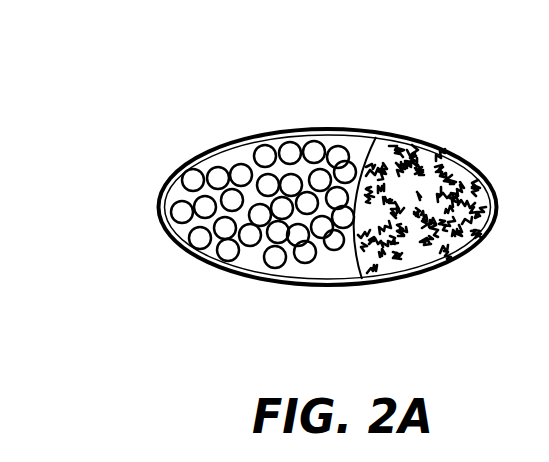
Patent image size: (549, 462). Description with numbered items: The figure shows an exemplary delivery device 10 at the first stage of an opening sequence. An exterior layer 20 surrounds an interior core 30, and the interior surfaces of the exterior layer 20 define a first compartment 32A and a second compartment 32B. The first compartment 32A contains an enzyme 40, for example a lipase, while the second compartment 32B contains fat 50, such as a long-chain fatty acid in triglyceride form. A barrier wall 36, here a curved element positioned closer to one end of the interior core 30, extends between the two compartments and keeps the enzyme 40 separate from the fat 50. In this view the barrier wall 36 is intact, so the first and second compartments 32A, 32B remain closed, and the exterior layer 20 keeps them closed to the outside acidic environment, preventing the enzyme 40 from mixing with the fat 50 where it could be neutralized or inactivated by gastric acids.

The delivery device 10 is at (130, 146).
The exterior layer 20 is at (279, 98).
The interior core 30 is at (331, 272).
The first compartment 32A is at (464, 236).
The second compartment 32B is at (243, 262).
The barrier wall 36 is at (375, 140).
The enzyme 40 is at (441, 175).
The fat 50 is at (250, 173).